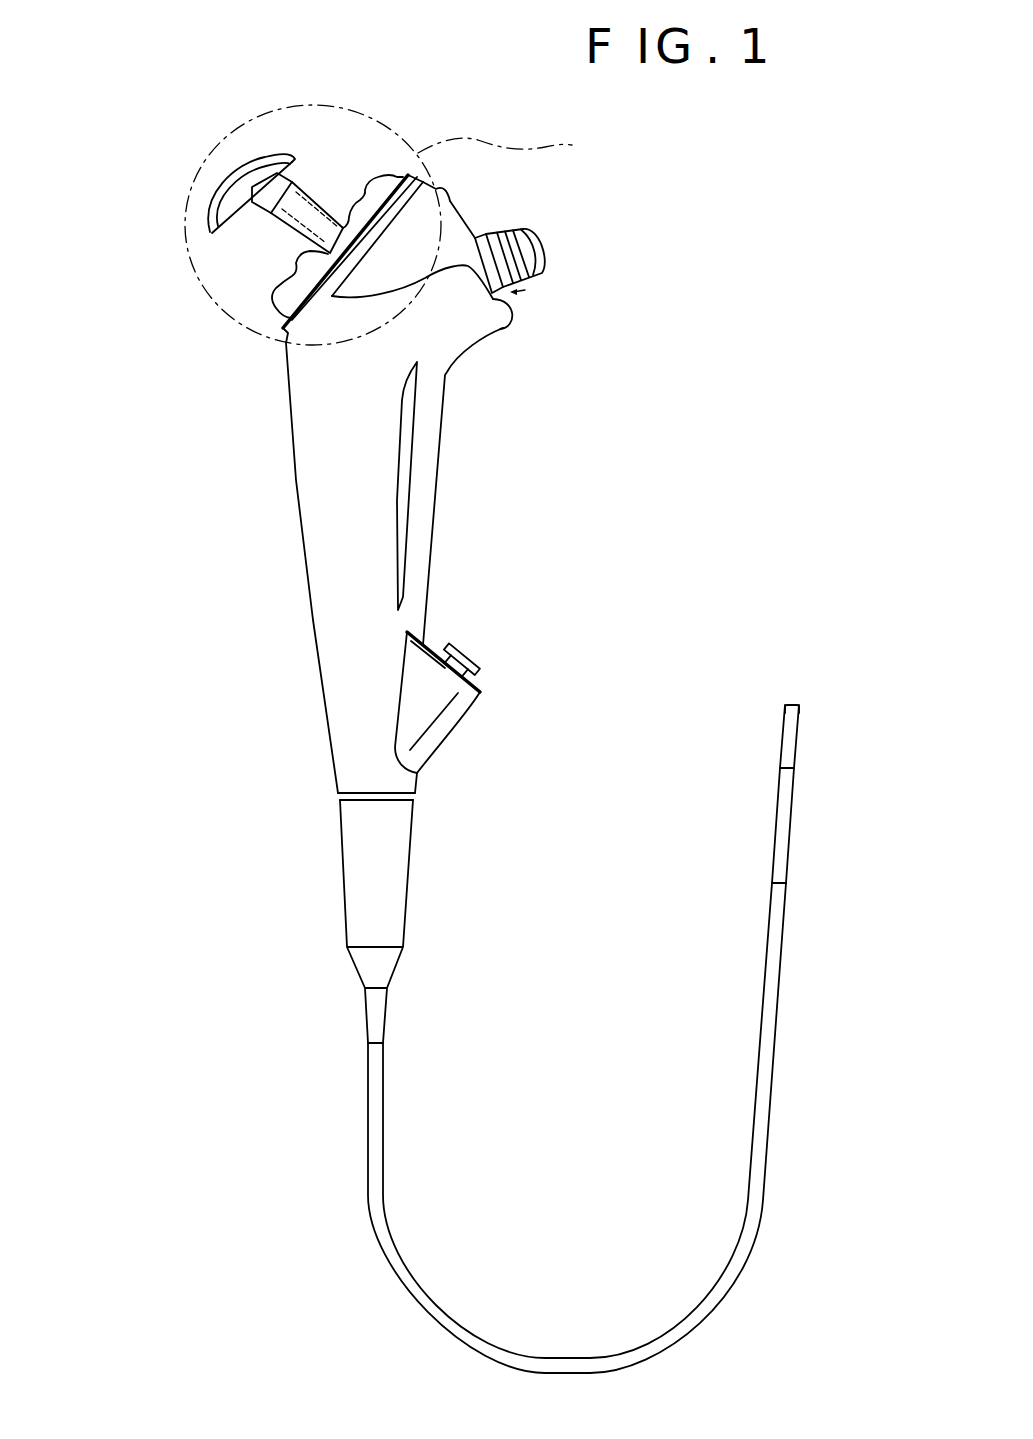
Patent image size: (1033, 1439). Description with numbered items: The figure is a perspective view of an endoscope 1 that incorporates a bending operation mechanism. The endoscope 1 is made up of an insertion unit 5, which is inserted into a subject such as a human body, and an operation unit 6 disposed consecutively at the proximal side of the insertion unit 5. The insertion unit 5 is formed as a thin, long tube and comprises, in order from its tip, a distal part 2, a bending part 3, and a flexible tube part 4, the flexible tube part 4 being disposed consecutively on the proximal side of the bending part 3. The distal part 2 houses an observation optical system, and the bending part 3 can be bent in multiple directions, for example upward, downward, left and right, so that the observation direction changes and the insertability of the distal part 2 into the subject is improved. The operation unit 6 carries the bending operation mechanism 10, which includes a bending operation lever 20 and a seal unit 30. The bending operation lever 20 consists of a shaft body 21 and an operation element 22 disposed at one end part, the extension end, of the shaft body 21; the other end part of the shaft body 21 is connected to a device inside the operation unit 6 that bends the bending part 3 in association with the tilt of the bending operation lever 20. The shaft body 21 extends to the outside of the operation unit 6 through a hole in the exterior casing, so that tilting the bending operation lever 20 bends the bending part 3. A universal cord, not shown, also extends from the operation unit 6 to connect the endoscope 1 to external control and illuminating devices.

The endoscope 1 is at (530, 584).
The distal part 2 is at (782, 733).
The bending part 3 is at (776, 818).
The flexible tube part 4 is at (768, 946).
The insertion unit 5 is at (698, 717).
The operation unit 6 is at (332, 563).
The bending operation mechanism 10 is at (105, 36).
The bending operation lever 20 is at (180, 79).
The shaft body 21 is at (316, 208).
The operation element 22 is at (257, 173).
The seal unit 30 is at (275, 291).